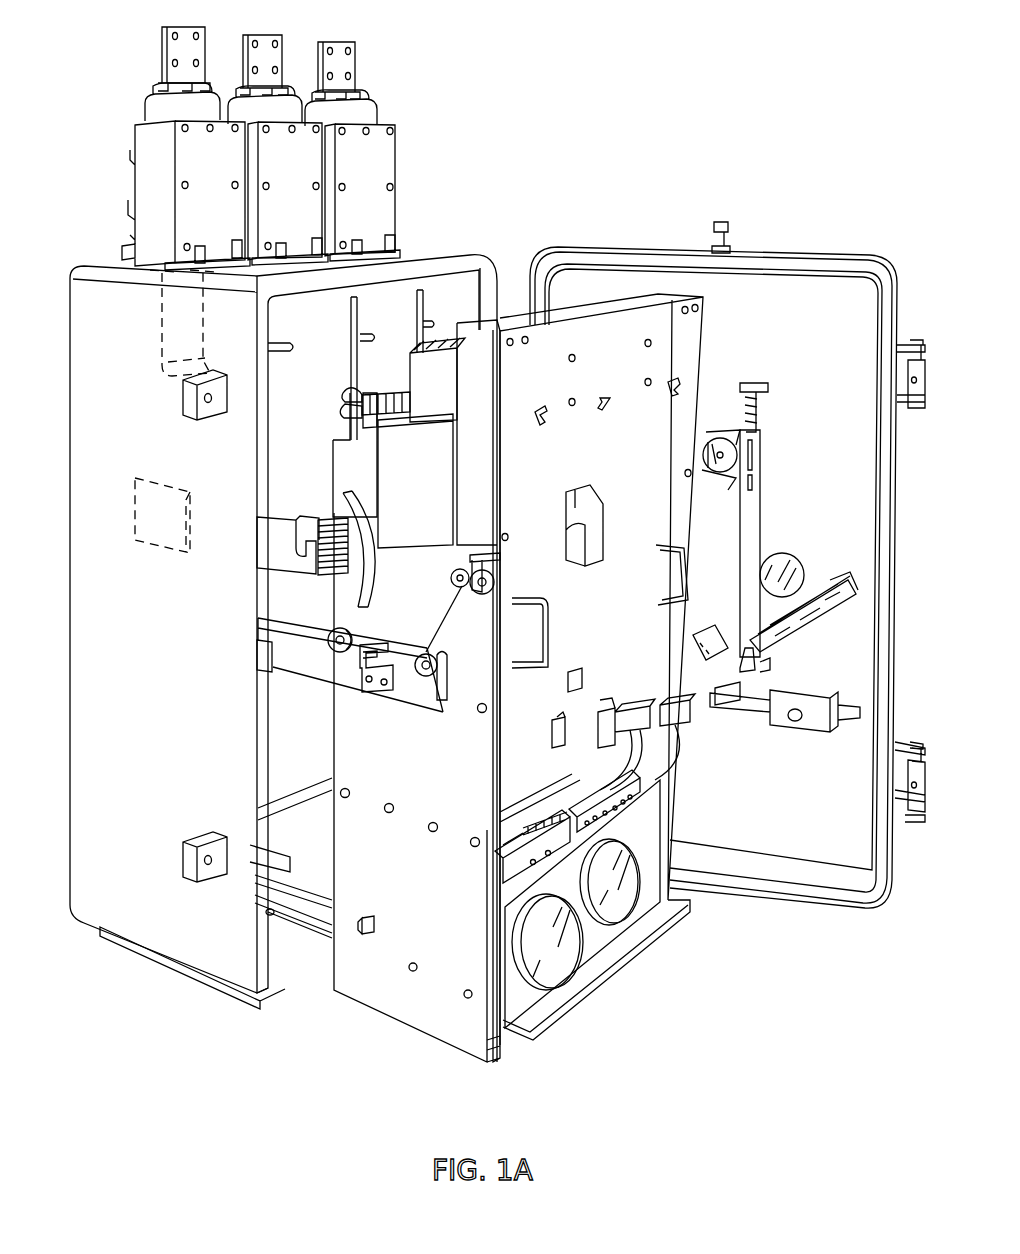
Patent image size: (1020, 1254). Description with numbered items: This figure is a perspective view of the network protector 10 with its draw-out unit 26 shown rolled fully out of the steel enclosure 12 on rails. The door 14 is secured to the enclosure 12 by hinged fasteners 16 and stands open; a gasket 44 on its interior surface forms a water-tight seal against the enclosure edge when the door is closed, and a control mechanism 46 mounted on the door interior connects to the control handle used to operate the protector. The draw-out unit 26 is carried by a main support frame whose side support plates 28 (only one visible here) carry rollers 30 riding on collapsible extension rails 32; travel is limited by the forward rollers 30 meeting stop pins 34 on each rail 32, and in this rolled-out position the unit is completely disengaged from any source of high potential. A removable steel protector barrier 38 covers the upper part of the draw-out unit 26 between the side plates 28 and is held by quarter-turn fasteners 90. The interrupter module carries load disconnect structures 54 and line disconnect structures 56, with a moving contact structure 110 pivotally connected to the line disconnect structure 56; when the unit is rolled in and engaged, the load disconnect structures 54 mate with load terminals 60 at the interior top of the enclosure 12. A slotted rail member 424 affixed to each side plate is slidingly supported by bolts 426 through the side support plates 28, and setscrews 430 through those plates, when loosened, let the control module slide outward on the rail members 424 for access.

The network protector 10 is at (470, 26).
The steel enclosure 12 is at (84, 264).
The door 14 is at (848, 253).
The hinged fasteners 16 is at (928, 402).
The draw-out unit 26 is at (418, 1081).
The side support plates 28 is at (397, 1000).
The rollers 30 is at (427, 633).
The collapsible extension rails 32 is at (318, 681).
The stop pins 34 is at (440, 682).
The removable steel protector barrier 38 is at (578, 335).
The gasket 44 is at (753, 262).
The control mechanism 46 is at (761, 504).
The load disconnect structures 54 is at (347, 393).
The line disconnect structures 56 is at (320, 520).
The load terminals 60 is at (162, 335).
The quarter-turn fasteners 90 is at (600, 406).
The moving contact structure 110 is at (478, 711).
The slotted rail member 424 is at (302, 938).
The bolts 426 is at (466, 992).
The setscrews 430 is at (374, 920).